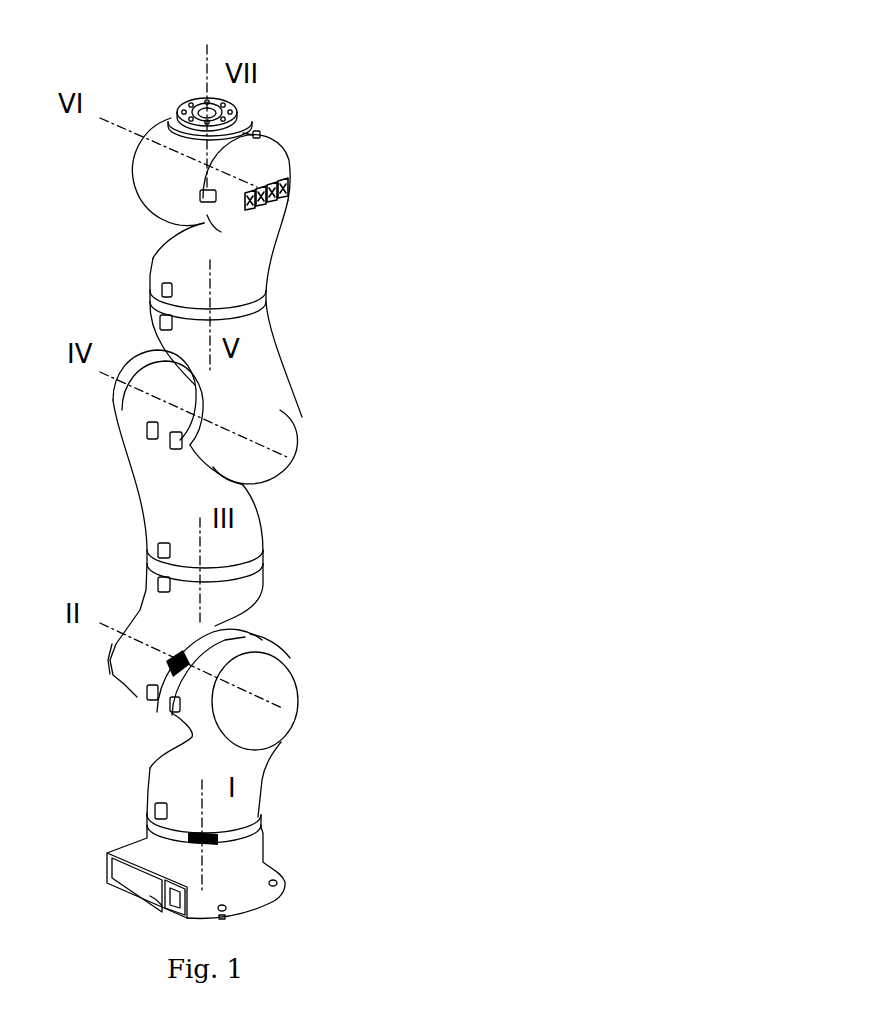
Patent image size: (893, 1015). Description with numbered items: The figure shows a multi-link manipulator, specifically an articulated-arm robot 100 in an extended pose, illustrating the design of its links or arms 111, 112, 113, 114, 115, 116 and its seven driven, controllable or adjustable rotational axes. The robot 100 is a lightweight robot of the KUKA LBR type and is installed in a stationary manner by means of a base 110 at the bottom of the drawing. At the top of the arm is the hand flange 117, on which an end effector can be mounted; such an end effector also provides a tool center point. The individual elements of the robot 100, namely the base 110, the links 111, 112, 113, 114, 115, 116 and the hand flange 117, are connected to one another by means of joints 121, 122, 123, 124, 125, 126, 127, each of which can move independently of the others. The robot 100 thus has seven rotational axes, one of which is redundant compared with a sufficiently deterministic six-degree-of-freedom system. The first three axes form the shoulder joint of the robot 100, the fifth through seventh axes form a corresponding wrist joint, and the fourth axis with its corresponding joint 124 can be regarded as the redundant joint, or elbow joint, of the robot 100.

The articulated-arm robot 100 is at (466, 153).
The base 110 is at (280, 875).
The link 111 is at (258, 773).
The link 112 is at (248, 618).
The link 113 is at (152, 480).
The link 114 is at (273, 368).
The link 115 is at (253, 262).
The link 116 is at (153, 178).
The hand flange 117 is at (187, 98).
The joint 121 is at (150, 828).
The joint 122 is at (157, 708).
The joint 123 is at (157, 563).
The joint 124 is at (162, 443).
The joint 125 is at (155, 300).
The joint 126 is at (268, 139).
The joint 127 is at (240, 122).